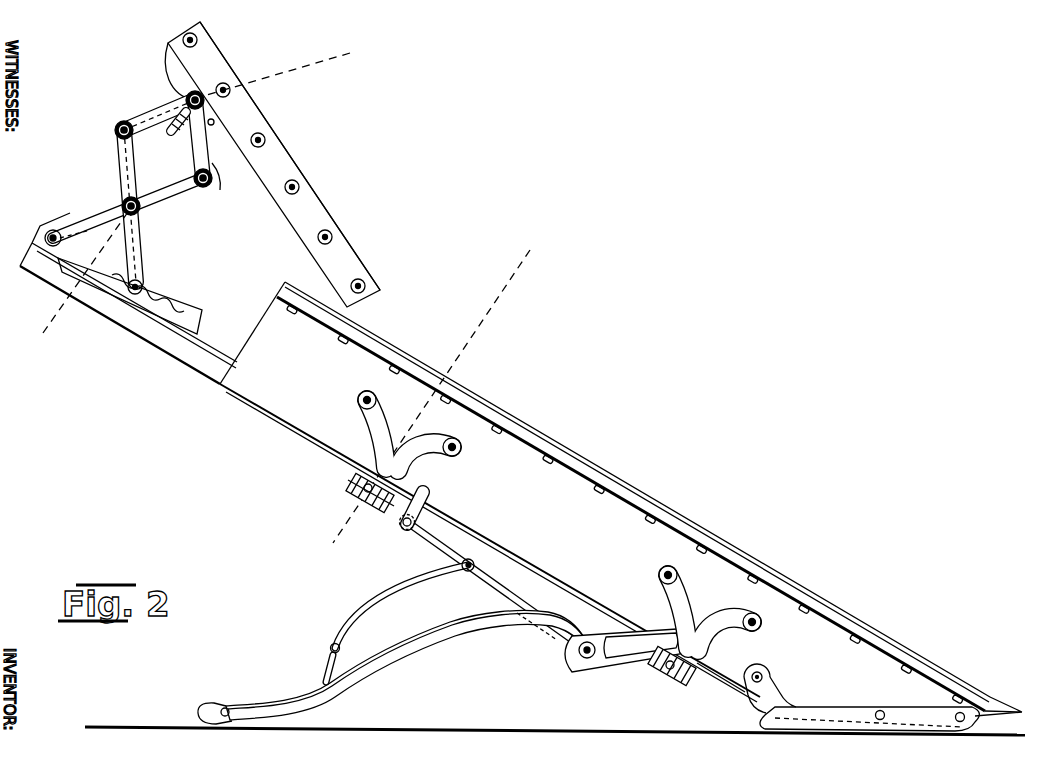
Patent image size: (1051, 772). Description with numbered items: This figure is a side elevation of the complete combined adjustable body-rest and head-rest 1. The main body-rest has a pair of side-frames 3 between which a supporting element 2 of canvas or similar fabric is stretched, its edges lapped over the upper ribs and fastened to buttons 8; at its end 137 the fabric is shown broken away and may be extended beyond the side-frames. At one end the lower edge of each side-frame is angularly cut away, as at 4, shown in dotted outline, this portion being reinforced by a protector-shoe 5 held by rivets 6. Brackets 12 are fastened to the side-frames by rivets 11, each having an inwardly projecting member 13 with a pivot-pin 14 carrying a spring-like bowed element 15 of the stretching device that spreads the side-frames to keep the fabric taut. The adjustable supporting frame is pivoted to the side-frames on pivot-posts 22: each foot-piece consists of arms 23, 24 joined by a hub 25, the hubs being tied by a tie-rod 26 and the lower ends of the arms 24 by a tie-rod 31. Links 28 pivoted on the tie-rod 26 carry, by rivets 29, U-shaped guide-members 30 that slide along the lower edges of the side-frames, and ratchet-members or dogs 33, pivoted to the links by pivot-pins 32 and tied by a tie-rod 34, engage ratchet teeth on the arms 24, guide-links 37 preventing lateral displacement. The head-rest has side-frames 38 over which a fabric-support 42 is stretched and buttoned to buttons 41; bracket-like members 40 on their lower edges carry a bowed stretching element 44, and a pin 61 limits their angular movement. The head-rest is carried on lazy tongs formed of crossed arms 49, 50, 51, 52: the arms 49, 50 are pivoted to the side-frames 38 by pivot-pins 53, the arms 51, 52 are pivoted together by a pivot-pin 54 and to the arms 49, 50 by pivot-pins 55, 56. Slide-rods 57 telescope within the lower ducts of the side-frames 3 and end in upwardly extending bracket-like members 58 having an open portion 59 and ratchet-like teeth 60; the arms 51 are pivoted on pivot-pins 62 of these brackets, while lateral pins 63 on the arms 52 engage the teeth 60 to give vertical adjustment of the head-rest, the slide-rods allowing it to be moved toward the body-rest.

The combined adjustable body-rest and head-rest 1 is at (602, 496).
The supporting element 2 is at (591, 457).
The side-frame 3 is at (490, 543).
The angularly cut-away portion 4 is at (847, 697).
The protector-shoe 5 is at (860, 710).
The rivet 6 is at (895, 703).
The button 8 is at (297, 317).
The rivet 11 is at (378, 405).
The bracket 12 is at (372, 462).
The inwardly projecting member 13 is at (350, 484).
The pivot-pin 14 is at (368, 494).
The bowed element 15 is at (348, 495).
The pivot-post 22 is at (708, 646).
The arm 23 is at (622, 658).
The arm 24 is at (419, 657).
The hub 25 is at (583, 660).
The tie-rod 26 is at (562, 658).
The link 28 is at (503, 592).
The rivet 29 is at (406, 530).
The guide-member 30 is at (424, 498).
The tie-rod 31 is at (227, 707).
The pivot-pin 32 is at (476, 563).
The ratchet-member 33 is at (366, 608).
The tie-rod 34 is at (331, 646).
The guide-link 37 is at (318, 675).
The side-frame 38 is at (277, 213).
The bracket-like member 40 is at (168, 100).
The button 41 is at (200, 42).
The fabric-support 42 is at (334, 193).
The bowed element 44 is at (172, 136).
The arm 49 is at (140, 120).
The arm 50 is at (212, 184).
The arm 51 is at (88, 217).
The arm 52 is at (140, 234).
The pivot-pin 53 is at (186, 96).
The pivot-pin 54 is at (122, 203).
The pivot-pin 55 is at (114, 129).
The pivot-pin 56 is at (203, 188).
The slide-rod 57 is at (48, 276).
The bracket-like member 58 is at (52, 217).
The open portion 59 is at (180, 302).
The ratchet-like teeth 60 is at (138, 300).
The pin 61 is at (215, 122).
The pivot-pin 62 is at (46, 232).
The pin 63 is at (142, 290).
The extended fabric-portion 137 is at (1005, 703).